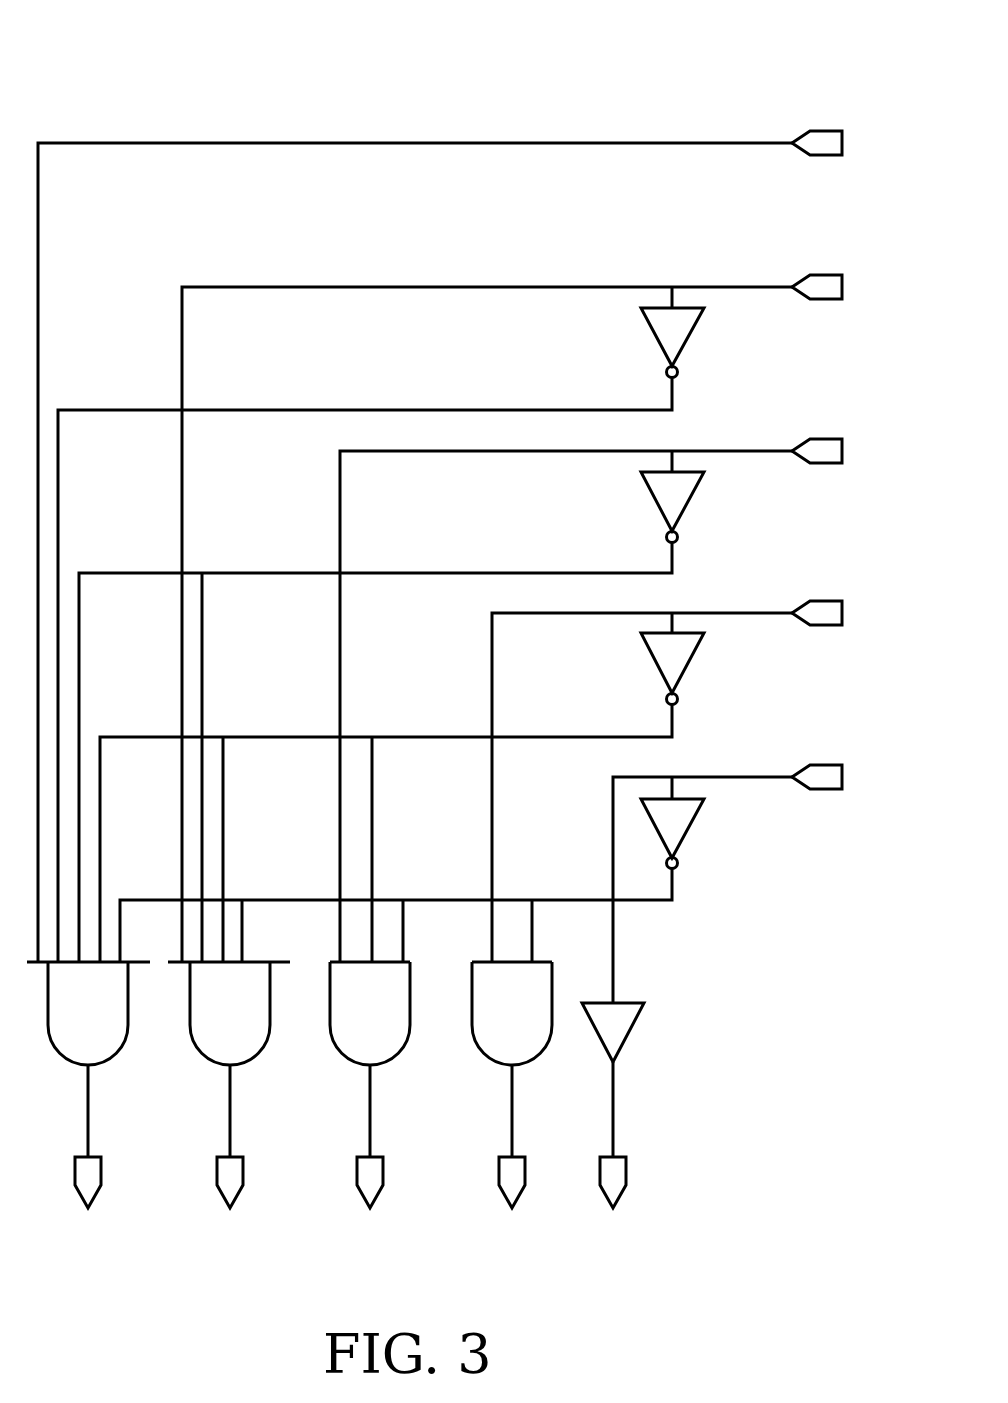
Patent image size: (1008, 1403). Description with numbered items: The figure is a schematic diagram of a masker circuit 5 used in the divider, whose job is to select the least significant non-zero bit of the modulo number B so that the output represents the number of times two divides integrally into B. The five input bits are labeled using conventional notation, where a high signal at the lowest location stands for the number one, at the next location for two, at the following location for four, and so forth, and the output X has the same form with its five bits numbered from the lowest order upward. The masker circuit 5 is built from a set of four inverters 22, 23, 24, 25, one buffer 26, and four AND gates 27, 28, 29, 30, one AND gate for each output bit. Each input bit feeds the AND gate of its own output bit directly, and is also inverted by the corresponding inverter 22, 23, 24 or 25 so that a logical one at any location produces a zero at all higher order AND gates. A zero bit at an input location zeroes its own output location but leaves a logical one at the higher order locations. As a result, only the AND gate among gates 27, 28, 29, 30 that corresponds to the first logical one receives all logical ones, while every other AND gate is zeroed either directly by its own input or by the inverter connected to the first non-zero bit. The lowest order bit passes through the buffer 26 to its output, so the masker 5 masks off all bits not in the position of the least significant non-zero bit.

The masker circuit 5 is at (168, 92).
The inverter 22 is at (695, 820).
The inverter 23 is at (680, 660).
The inverter 24 is at (680, 492).
The inverter 25 is at (673, 334).
The buffer 26 is at (620, 1025).
The AND gate 27 is at (533, 1033).
The AND gate 28 is at (392, 1033).
The AND gate 29 is at (250, 1033).
The AND gate 30 is at (108, 1033).